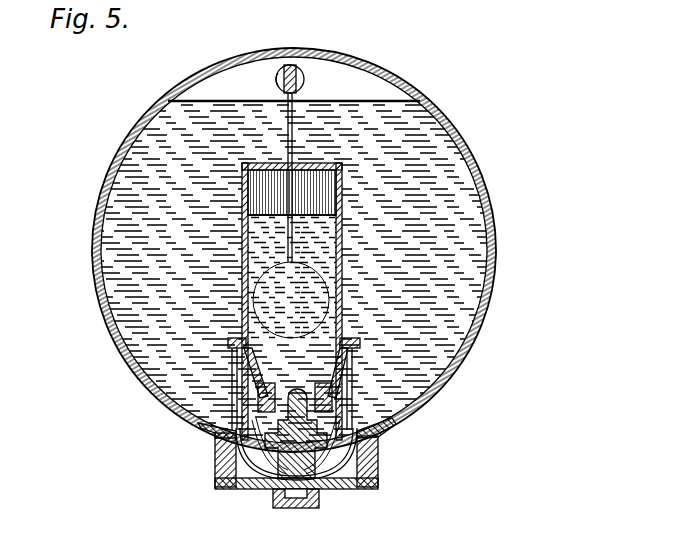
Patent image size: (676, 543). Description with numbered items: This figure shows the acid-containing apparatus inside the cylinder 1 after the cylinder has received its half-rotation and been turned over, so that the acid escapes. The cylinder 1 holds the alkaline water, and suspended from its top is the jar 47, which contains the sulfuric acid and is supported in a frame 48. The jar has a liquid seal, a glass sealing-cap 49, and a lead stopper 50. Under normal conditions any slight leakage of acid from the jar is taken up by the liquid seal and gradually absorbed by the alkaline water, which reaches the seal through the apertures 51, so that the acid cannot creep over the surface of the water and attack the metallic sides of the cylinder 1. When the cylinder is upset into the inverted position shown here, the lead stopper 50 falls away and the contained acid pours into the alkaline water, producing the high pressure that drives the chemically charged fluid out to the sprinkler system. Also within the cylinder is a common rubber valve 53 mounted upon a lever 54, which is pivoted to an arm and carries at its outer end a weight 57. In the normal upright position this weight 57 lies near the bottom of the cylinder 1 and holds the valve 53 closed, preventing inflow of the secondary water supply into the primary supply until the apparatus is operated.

The cylinder 1 is at (468, 149).
The jar 47 is at (330, 160).
The frame 48 is at (367, 415).
The glass sealing-cap 49 is at (380, 477).
The lead stopper 50 is at (260, 492).
The apertures 51 is at (363, 360).
The rubber valve 53 is at (296, 70).
The lever 54 is at (282, 90).
The weight 57 is at (340, 293).